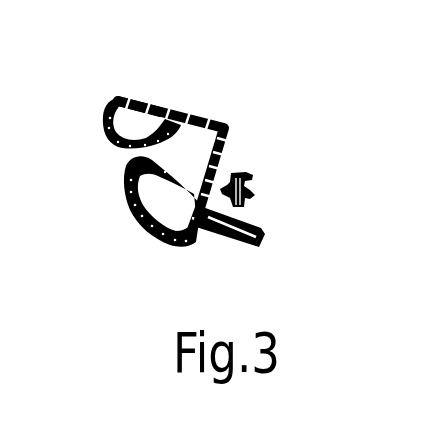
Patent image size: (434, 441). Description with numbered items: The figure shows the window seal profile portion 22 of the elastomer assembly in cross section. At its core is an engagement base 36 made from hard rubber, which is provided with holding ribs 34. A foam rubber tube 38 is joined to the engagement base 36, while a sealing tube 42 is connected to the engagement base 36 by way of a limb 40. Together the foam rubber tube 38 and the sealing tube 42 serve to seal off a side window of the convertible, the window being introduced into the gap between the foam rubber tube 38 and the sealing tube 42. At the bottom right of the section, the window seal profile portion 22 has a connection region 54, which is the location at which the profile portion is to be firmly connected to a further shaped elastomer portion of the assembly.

The window seal profile portion 22 is at (193, 91).
The holding ribs 34 is at (257, 200).
The engagement base 36 is at (247, 168).
The foam rubber tube 38 is at (148, 230).
The limb 40 is at (144, 97).
The sealing tube 42 is at (115, 138).
The connection region 54 is at (244, 250).